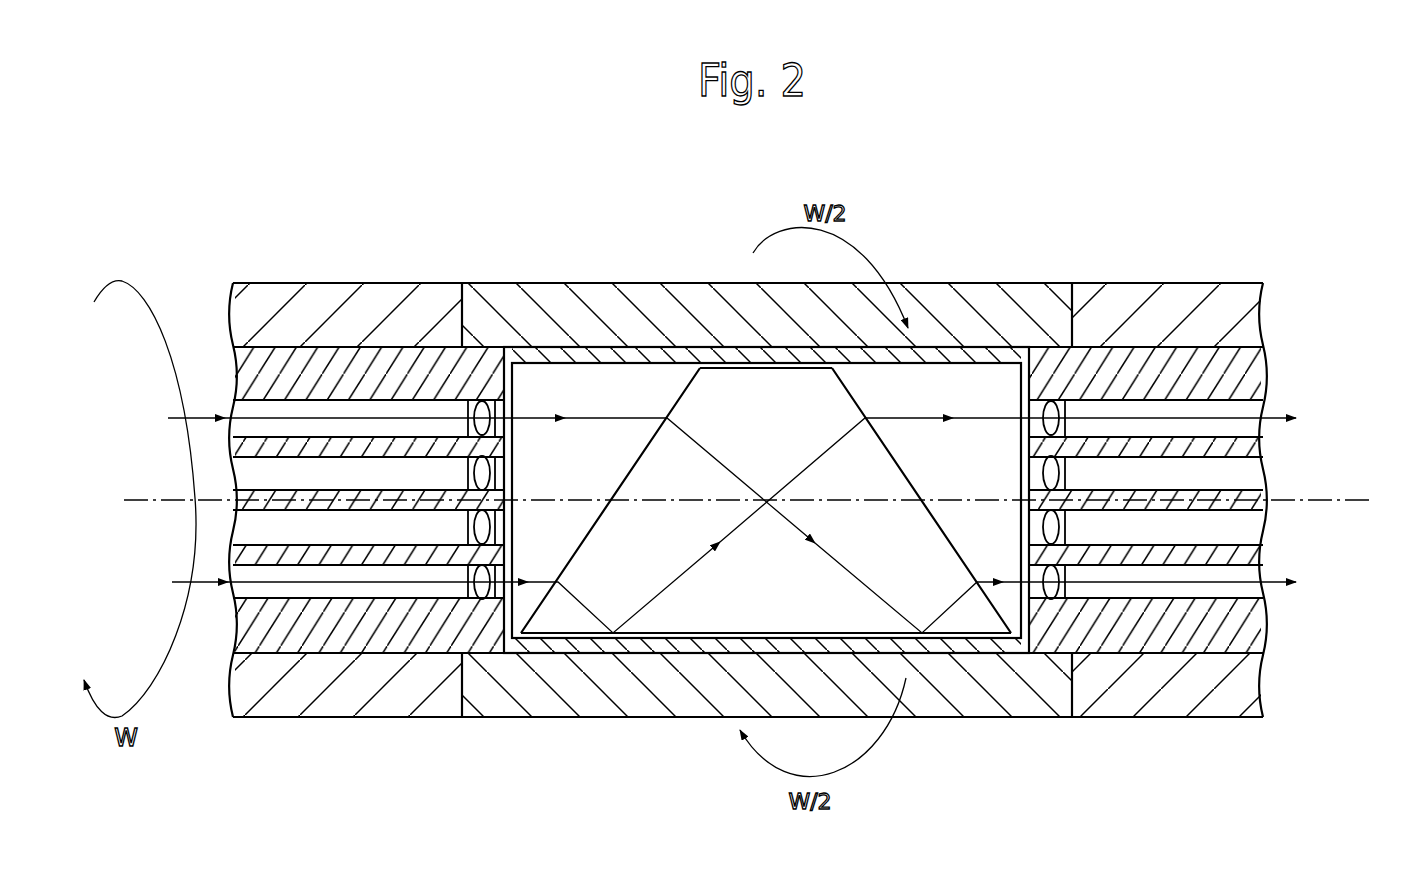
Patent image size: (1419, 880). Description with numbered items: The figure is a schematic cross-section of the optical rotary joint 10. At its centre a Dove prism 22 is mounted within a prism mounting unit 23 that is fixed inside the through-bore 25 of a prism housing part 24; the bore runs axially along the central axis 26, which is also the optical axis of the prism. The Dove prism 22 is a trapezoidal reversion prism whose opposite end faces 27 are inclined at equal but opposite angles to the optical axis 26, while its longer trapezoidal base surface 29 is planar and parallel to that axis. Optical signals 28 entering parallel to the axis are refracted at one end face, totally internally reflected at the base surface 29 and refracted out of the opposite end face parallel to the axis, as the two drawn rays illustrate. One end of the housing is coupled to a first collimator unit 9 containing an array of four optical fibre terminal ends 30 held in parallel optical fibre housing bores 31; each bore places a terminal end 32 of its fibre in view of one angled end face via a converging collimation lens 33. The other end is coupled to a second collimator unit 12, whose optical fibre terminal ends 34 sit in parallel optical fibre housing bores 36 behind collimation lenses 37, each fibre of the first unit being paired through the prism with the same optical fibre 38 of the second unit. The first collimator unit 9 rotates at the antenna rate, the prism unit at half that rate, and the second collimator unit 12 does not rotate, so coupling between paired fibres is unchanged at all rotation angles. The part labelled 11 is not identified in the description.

The first collimator unit 9 is at (375, 281).
The optical rotary joint 10 is at (668, 225).
The housing 11 is at (582, 281).
The second collimator unit 12 is at (1236, 281).
The Dove prism 22 is at (858, 403).
The prism mounting unit 23 is at (975, 347).
The prism housing part 24 is at (1056, 303).
The bore 25 is at (1058, 362).
The optical axis 26 is at (146, 498).
The end faces 27 is at (643, 456).
The optical signals 28 is at (630, 416).
The longer trapezoidal base surface 29 is at (702, 655).
The optical fibre terminal ends 30 is at (416, 421).
The optical fibre housing bores 31 is at (334, 412).
The terminal end 32 is at (460, 411).
The converging collimation lens 33 is at (490, 413).
The optical fibre terminal ends 34 is at (1069, 431).
The optical fibre housing bores 36 is at (1243, 411).
The converging collimation lens 37 is at (1090, 393).
The optical fibre 38 is at (1203, 410).